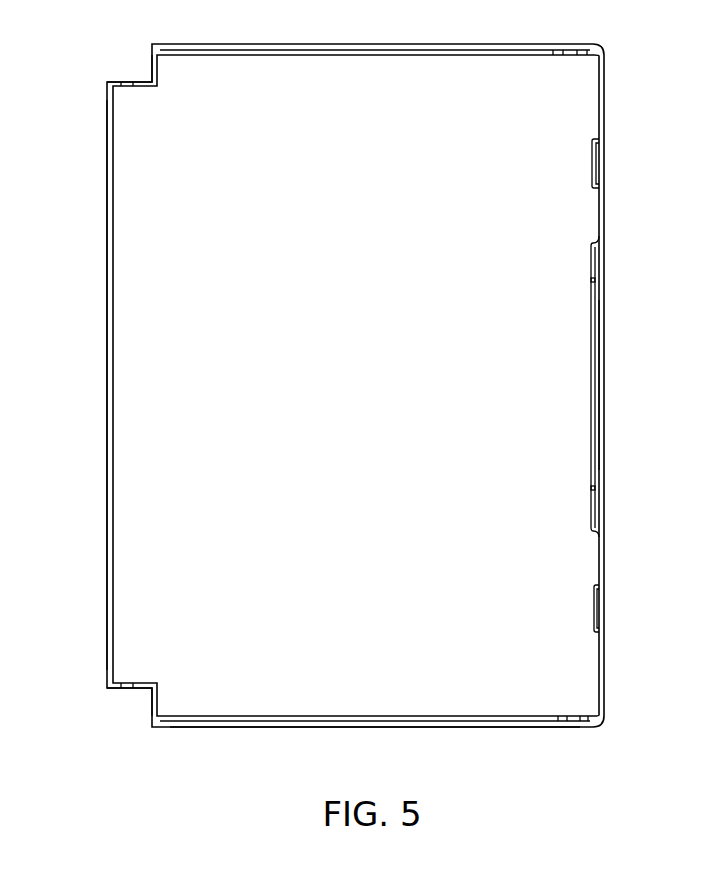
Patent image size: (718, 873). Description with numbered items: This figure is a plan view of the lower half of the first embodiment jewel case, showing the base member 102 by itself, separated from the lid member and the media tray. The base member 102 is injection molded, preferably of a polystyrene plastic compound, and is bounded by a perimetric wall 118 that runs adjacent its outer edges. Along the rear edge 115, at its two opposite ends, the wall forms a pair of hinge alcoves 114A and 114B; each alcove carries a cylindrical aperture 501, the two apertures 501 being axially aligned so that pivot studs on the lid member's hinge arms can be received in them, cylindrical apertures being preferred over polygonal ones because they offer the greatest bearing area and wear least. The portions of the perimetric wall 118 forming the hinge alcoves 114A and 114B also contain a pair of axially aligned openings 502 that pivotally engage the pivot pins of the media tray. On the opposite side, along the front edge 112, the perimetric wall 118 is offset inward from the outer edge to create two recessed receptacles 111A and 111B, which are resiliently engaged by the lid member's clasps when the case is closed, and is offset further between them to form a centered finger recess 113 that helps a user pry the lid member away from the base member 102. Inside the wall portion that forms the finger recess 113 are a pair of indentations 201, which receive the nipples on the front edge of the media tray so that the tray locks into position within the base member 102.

The base member 102 is at (614, 42).
The hinge alcove 114A is at (141, 71).
The hinge alcove 114B is at (142, 699).
The cylindrical aperture 501 is at (122, 88).
The axially aligned opening 502 is at (375, 102).
The recessed receptacle 111A is at (600, 160).
The recessed receptacle 111B is at (600, 604).
The front edge 112 is at (606, 362).
The finger recess 113 is at (598, 397).
The indentation 201 is at (597, 281).
The rear edge 115 is at (106, 403).
The perimetric wall 118 is at (295, 716).